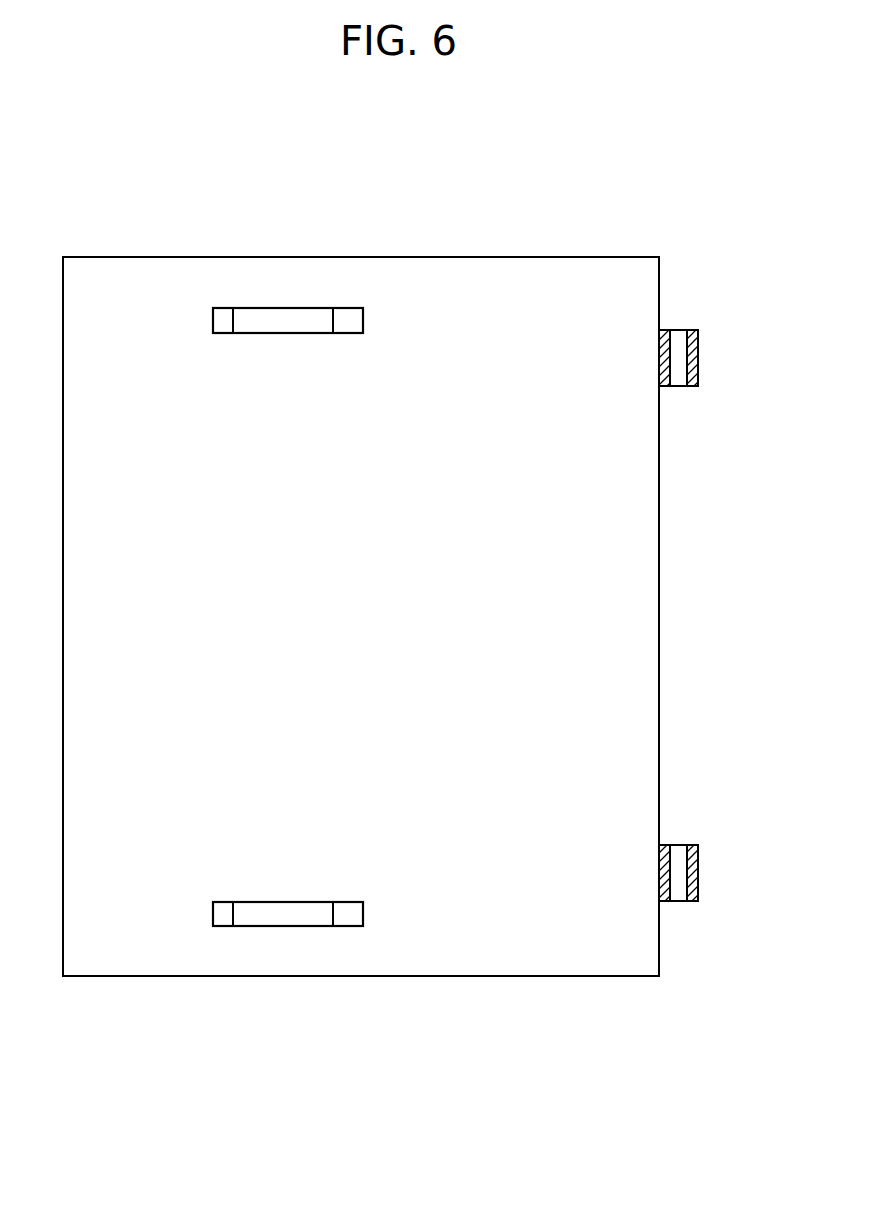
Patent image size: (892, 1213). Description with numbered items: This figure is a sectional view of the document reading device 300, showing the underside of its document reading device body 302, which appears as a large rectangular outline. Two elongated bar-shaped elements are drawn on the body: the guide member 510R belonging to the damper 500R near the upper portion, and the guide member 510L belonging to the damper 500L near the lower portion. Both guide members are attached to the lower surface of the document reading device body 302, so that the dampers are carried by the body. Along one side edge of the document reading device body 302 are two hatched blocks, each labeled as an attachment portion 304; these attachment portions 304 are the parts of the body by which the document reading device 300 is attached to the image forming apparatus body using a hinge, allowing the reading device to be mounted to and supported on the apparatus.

The document reading device 300 is at (604, 172).
The document reading device body 302 is at (559, 986).
The attachment portions 304 is at (679, 334).
The damper 500R is at (250, 342).
The guide member 510R is at (307, 325).
The damper 500L is at (250, 894).
The guide member 510L is at (307, 912).